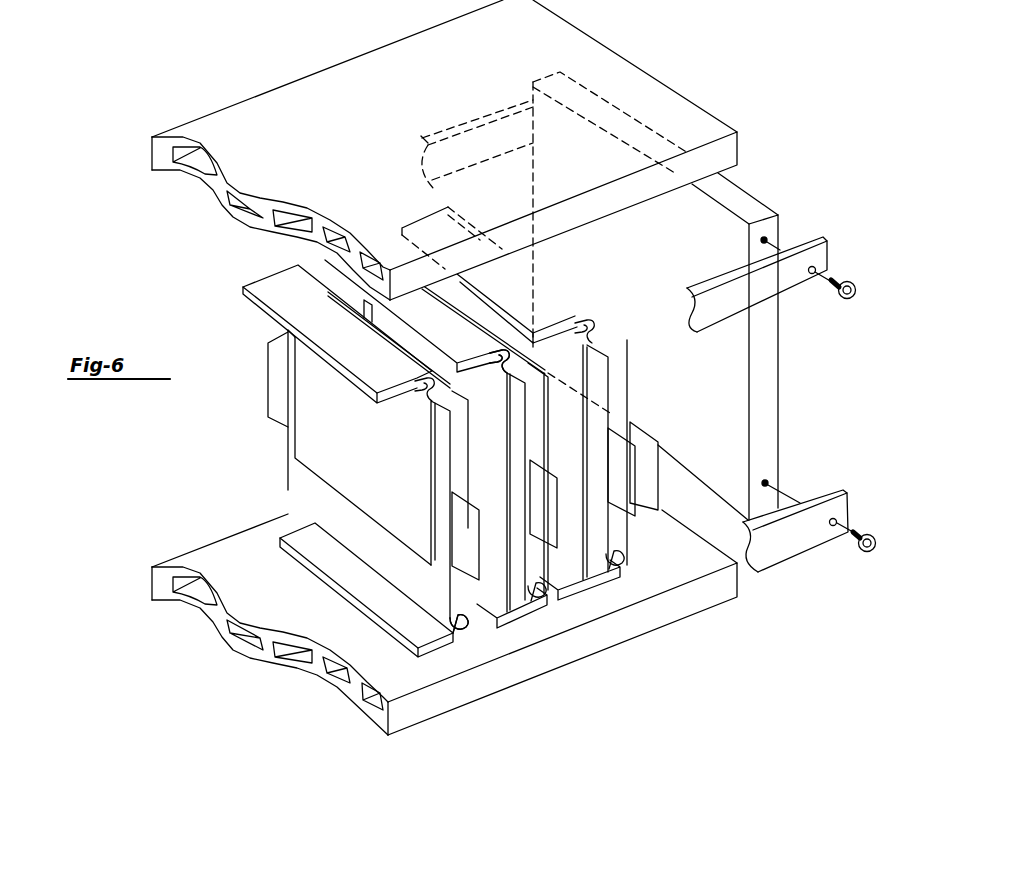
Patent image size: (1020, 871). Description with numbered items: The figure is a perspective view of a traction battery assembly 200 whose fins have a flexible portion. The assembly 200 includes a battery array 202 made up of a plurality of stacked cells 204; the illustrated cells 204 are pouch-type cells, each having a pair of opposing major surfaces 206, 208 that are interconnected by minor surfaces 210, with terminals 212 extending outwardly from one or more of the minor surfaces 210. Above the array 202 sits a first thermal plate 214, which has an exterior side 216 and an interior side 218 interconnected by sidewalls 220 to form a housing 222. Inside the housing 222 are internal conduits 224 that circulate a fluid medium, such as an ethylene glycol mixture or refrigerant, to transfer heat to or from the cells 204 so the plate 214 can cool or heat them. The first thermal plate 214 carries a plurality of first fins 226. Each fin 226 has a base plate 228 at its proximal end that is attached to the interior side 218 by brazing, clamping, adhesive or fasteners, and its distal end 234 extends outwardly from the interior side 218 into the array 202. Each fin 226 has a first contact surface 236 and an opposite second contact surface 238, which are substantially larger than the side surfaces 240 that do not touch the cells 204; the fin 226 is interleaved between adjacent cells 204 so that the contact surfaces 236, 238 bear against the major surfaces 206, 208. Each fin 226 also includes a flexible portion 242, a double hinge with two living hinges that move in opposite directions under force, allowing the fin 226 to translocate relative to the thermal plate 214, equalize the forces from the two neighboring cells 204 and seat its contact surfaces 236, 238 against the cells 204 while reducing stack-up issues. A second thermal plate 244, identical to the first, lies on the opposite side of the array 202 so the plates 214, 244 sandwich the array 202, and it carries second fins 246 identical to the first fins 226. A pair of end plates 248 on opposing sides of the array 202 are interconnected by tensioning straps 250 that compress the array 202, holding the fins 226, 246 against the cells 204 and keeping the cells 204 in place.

The traction battery assembly 200 is at (132, 135).
The battery array 202 is at (230, 287).
The stacked cells 204 is at (299, 488).
The major surface 206 is at (415, 574).
The major surface 208 is at (585, 318).
The minor surfaces 210 is at (612, 365).
The terminals 212 is at (661, 448).
The first thermal plate 214 is at (656, 97).
The exterior side 216 is at (523, 38).
The interior side 218 is at (189, 172).
The sidewalls 220 is at (722, 154).
The housing 222 is at (702, 124).
The internal conduits 224 is at (277, 210).
The first fins 226 is at (417, 511).
The base plate 228 is at (337, 336).
The distal end 234 is at (289, 468).
The first contact surface 236 is at (335, 404).
The second contact surface 238 is at (592, 346).
The side surfaces 240 is at (603, 342).
The flexible portion 242 is at (417, 392).
The second thermal plate 244 is at (613, 637).
The second fins 246 is at (452, 642).
The end plates 248 is at (776, 397).
The tensioning straps 250 is at (805, 250).